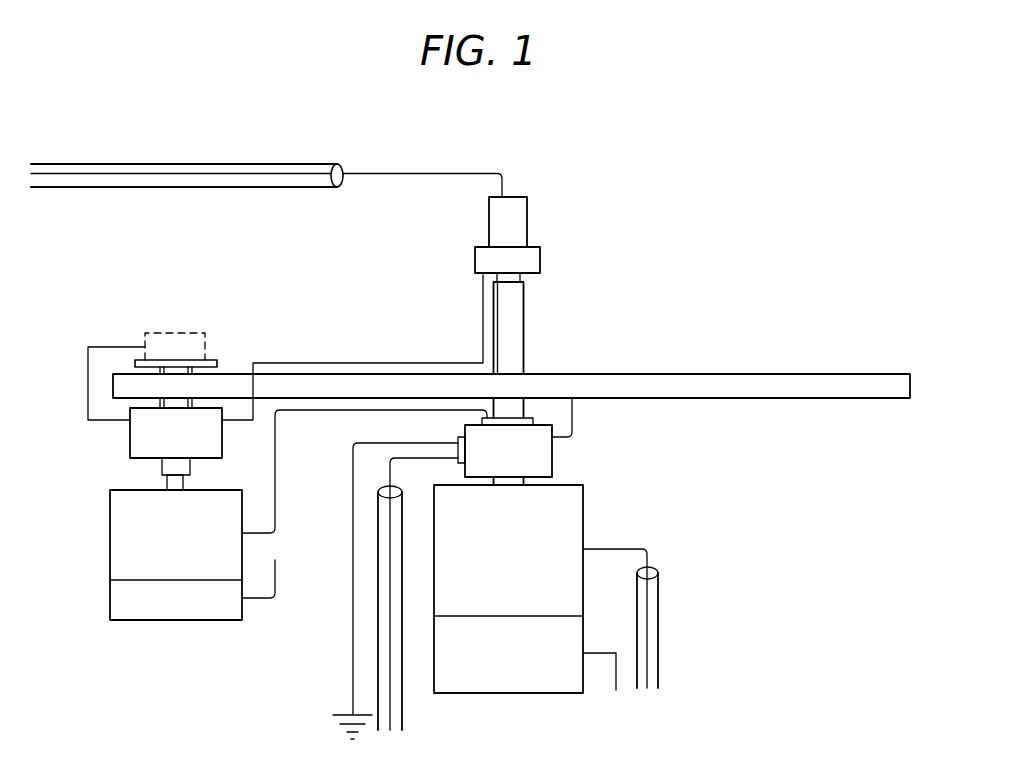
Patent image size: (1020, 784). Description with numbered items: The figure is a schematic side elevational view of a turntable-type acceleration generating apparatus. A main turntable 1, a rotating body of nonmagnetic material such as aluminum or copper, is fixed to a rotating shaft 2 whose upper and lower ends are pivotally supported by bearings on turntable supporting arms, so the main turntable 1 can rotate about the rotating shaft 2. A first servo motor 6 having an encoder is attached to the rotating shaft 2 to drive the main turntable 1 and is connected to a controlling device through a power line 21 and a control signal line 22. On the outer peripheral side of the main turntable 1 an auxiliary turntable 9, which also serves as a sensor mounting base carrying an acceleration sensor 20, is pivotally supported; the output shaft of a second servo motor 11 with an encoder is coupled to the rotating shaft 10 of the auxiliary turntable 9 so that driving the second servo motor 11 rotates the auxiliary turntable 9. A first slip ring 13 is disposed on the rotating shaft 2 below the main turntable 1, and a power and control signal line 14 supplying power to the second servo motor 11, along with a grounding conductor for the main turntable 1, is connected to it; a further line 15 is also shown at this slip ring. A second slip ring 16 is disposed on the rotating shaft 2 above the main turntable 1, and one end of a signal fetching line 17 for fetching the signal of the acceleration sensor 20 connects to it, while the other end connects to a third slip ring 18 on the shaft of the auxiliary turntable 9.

The main turntable 1 is at (798, 374).
The rotating shaft 2 is at (525, 332).
The first servo motor 6 is at (583, 633).
The auxiliary turntable 9 is at (220, 362).
The rotating shaft of the auxiliary turntable 10 is at (167, 488).
The second servo motor 11 is at (110, 599).
The first slip ring 13 is at (553, 455).
The power and control signal line 14 is at (277, 502).
The signal line 15 is at (575, 419).
The second slip ring 16 is at (527, 219).
The signal fetching line 17 is at (482, 316).
The third slip ring 18 is at (128, 448).
The acceleration sensor 20 is at (175, 333).
The power line 21 is at (660, 629).
The control signal line 22 is at (617, 675).